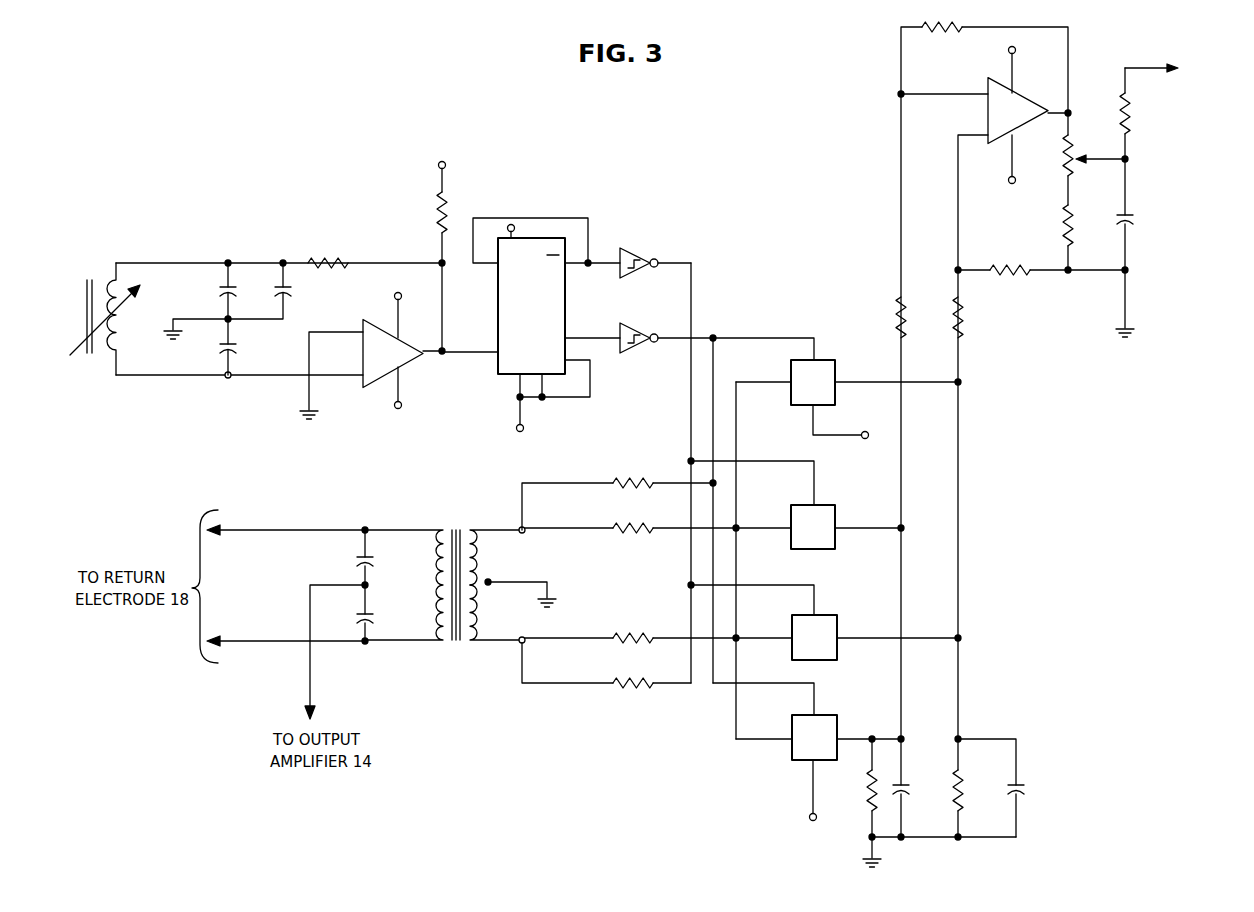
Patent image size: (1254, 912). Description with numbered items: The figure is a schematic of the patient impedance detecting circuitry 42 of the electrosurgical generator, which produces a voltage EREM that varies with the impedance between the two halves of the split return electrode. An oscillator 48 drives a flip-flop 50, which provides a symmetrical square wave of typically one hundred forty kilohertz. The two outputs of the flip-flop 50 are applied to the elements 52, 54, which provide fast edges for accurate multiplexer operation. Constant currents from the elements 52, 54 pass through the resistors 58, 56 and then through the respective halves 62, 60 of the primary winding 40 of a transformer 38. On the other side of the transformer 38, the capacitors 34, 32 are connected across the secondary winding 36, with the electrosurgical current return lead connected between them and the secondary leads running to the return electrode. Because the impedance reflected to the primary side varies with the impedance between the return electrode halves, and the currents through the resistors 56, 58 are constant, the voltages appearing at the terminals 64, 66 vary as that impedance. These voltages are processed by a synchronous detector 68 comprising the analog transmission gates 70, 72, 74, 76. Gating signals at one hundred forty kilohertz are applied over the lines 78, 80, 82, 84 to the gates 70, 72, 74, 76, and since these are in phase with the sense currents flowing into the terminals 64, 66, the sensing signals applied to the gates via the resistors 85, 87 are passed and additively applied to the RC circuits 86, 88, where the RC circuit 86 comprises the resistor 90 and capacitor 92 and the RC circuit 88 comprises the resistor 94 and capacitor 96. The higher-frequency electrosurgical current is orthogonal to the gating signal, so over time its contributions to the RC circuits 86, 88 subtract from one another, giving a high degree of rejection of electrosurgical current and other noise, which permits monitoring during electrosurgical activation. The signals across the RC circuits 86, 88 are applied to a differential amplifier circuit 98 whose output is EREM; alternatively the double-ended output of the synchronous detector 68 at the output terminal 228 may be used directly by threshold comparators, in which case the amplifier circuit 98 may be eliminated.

The patient impedance detecting circuitry 42 is at (181, 151).
The oscillator 48 is at (268, 258).
The flip-flop 50 is at (527, 250).
The fast-edge element 52 is at (637, 260).
The fast-edge element 54 is at (641, 351).
The resistor 58 is at (633, 482).
The transformer 38 is at (455, 520).
The secondary winding 36 is at (433, 603).
The primary winding 40 is at (462, 643).
The half of primary winding 62 is at (487, 549).
The half of primary winding 60 is at (487, 617).
The terminal 66 is at (525, 528).
The terminal 64 is at (525, 643).
The resistor 85 is at (631, 534).
The resistor 87 is at (638, 637).
The resistor 56 is at (626, 686).
The capacitor 34 is at (357, 562).
The capacitor 32 is at (357, 617).
The synchronous detector 68 is at (812, 328).
The line 78 is at (763, 312).
The line 80 is at (772, 437).
The line 82 is at (767, 562).
The line 84 is at (718, 684).
The analog transmission gate 70 is at (823, 393).
The analog transmission gate 72 is at (823, 537).
The analog transmission gate 74 is at (824, 647).
The analog transmission gate 76 is at (824, 747).
The output terminal 228 is at (958, 383).
The differential amplifier circuit 98 is at (950, 142).
The RC circuit 88 is at (945, 838).
The resistor 94 is at (867, 799).
The capacitor 96 is at (905, 784).
The RC circuit 86 is at (993, 838).
The resistor 90 is at (964, 786).
The capacitor 92 is at (1020, 793).